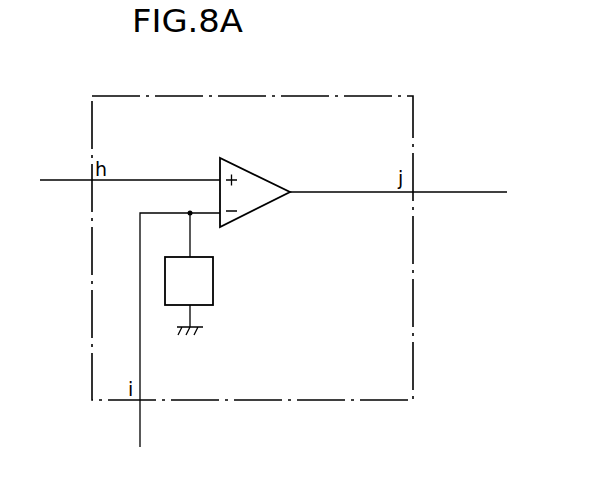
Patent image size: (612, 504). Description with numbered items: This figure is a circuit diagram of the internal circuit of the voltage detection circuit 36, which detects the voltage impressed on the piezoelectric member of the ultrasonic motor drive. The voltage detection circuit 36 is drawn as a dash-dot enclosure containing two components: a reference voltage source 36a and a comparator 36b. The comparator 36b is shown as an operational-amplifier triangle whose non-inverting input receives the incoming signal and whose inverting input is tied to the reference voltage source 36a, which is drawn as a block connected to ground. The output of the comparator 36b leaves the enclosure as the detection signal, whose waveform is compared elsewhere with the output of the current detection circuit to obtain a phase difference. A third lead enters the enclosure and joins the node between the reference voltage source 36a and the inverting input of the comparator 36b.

The voltage detection circuit 36 is at (347, 94).
The reference voltage source 36a is at (213, 283).
The comparator 36b is at (267, 172).